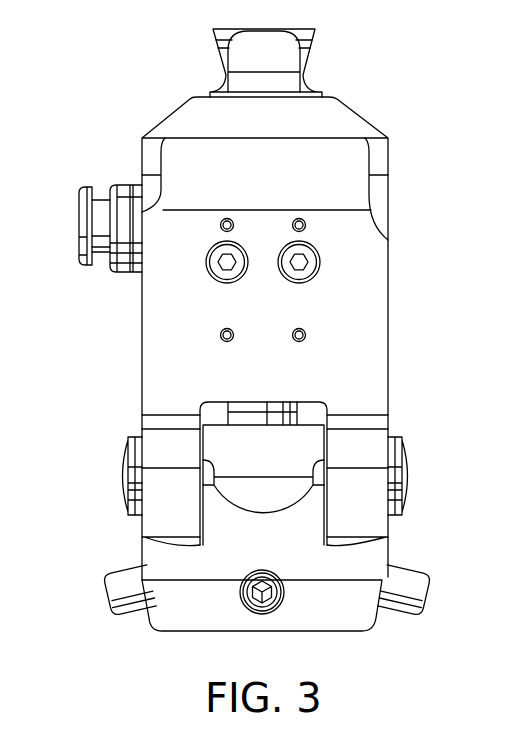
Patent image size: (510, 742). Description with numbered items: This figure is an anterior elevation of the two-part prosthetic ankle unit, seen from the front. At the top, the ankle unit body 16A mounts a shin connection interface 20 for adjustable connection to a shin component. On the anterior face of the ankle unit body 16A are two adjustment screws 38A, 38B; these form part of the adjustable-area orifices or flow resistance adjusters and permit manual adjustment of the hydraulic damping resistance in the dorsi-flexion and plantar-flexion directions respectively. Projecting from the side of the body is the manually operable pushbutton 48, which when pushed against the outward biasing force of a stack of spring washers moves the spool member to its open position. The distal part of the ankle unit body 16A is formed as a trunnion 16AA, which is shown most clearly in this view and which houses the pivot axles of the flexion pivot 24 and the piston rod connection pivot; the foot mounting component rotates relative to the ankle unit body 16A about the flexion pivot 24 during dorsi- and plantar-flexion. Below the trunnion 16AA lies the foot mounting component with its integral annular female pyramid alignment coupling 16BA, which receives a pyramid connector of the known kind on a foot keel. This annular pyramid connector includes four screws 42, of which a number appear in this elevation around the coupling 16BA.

The ankle unit body 16A is at (381, 364).
The trunnion 16AA is at (380, 443).
The annular female pyramid alignment coupling 16BA is at (162, 623).
The shin connection interface 20 is at (318, 42).
The flexion pivot 24 is at (410, 471).
The adjustment screw 38A is at (320, 260).
The adjustment screw 38B is at (206, 262).
The screws 42 is at (106, 571).
The pushbutton 48 is at (79, 224).